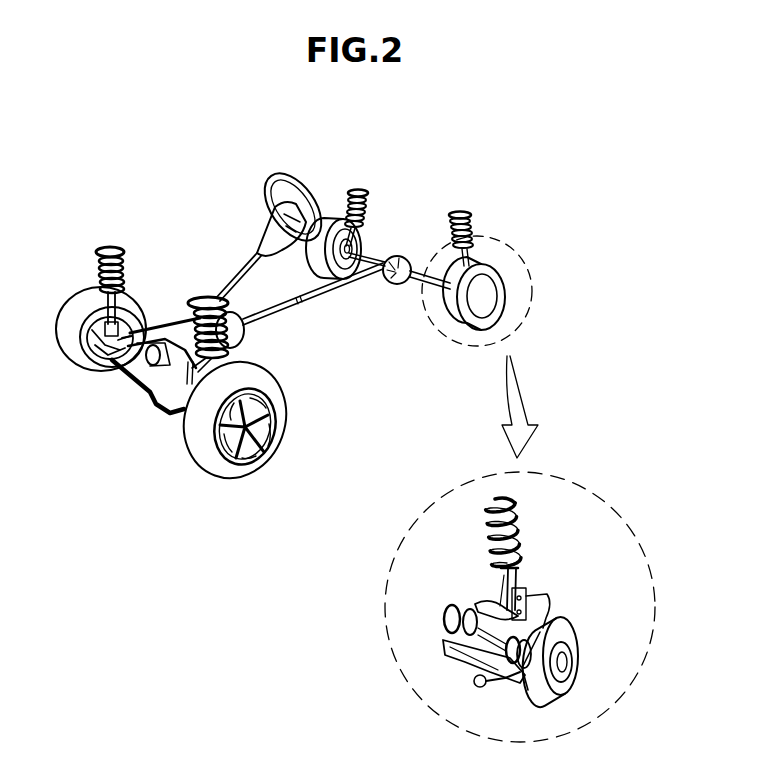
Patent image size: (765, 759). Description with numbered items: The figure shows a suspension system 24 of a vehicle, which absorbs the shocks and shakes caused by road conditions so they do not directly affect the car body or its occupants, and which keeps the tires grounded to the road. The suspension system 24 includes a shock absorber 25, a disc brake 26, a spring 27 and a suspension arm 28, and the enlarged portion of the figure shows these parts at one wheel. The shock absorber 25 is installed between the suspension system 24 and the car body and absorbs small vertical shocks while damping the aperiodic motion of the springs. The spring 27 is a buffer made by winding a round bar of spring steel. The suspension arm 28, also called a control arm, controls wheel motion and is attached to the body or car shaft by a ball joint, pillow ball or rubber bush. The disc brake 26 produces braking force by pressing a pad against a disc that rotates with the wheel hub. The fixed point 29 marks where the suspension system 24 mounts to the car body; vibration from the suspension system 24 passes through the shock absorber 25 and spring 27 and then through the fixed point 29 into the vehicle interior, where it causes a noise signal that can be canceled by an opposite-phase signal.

The suspension system 24 is at (84, 383).
The fixed point 29 is at (109, 247).
The spring 27 is at (519, 533).
The shock absorber 25 is at (514, 585).
The suspension arm 28 is at (498, 601).
The disc brake 26 is at (576, 636).